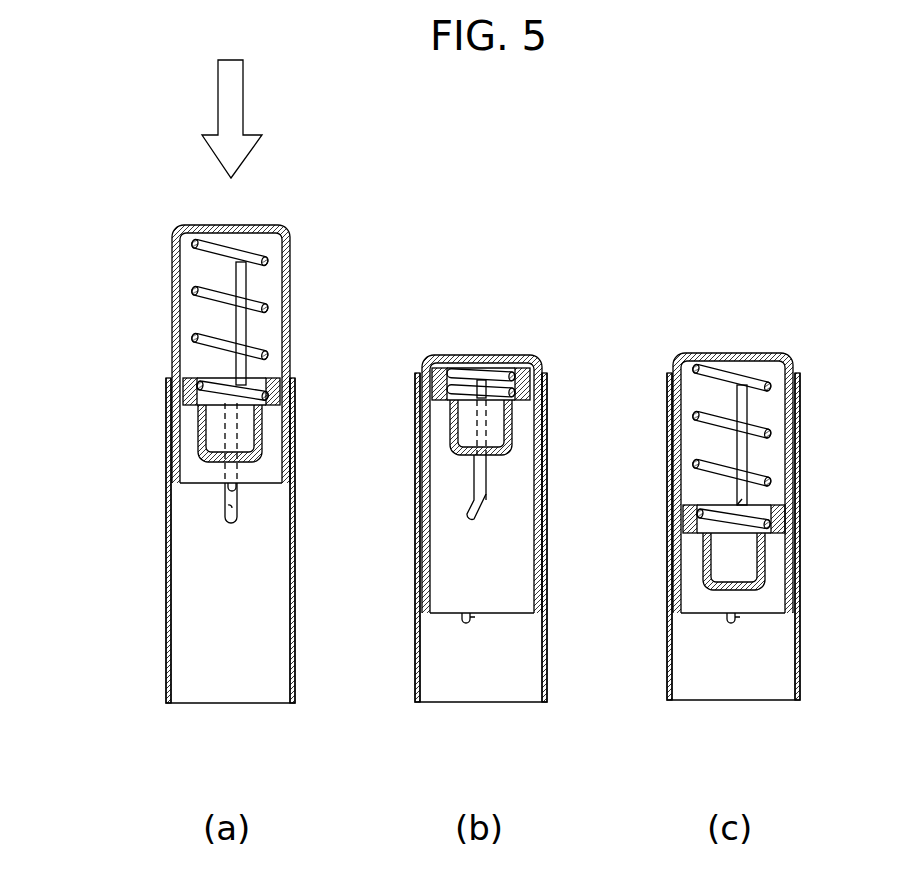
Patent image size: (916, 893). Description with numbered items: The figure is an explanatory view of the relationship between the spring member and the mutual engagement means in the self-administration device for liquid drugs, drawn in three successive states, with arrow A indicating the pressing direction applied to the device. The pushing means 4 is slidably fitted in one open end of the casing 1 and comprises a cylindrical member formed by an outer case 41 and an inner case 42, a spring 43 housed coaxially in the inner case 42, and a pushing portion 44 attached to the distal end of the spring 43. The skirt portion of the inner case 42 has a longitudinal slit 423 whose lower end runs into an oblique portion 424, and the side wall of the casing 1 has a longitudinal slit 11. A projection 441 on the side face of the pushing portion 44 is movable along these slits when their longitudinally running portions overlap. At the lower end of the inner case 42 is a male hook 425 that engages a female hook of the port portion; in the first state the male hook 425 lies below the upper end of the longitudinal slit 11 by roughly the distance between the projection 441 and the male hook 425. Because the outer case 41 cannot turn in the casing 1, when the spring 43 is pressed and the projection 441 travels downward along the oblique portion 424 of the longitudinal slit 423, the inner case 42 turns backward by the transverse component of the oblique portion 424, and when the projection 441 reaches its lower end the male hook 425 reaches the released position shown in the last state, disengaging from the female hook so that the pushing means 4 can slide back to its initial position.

The pressing direction A is at (245, 108).
The casing 1 is at (165, 612).
The pushing means 4 is at (158, 308).
The longitudinal slit 11 is at (223, 511).
The outer case 41 is at (291, 240).
The inner case 42 is at (288, 278).
The spring 43 is at (285, 310).
The pushing portion 44 is at (262, 420).
The longitudinal slit 423 is at (487, 472).
The oblique portion 424 is at (468, 520).
The male hook 425 is at (237, 494).
The projection 441 is at (785, 508).